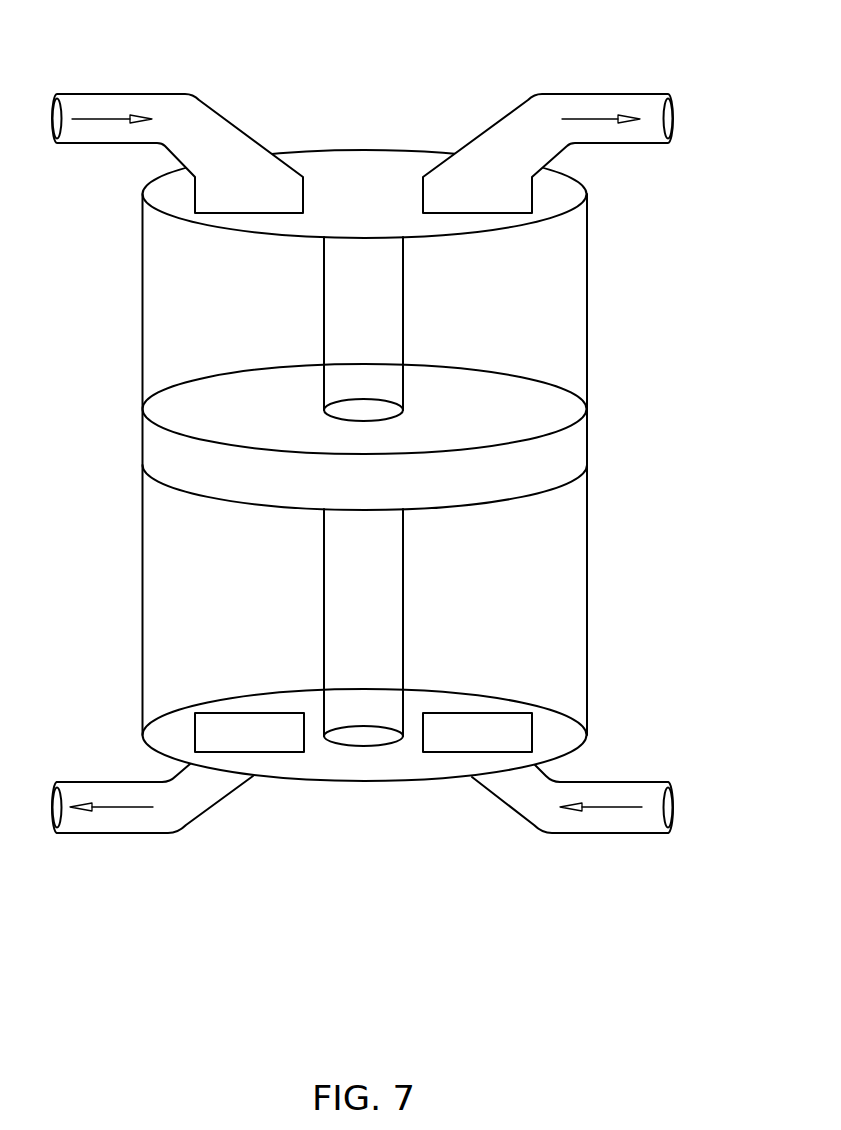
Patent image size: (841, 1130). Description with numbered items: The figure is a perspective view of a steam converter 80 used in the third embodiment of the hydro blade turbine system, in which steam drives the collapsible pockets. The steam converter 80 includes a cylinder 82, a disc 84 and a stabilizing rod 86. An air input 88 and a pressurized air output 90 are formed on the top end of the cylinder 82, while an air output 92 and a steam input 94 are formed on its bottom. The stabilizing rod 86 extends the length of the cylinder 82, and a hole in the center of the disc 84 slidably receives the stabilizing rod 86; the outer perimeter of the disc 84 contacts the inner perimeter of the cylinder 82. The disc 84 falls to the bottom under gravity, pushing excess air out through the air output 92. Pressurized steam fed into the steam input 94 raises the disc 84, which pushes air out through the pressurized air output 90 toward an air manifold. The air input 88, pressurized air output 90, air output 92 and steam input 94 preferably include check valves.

The steam converter 80 is at (416, 453).
The cylinder 82 is at (587, 293).
The disc 84 is at (528, 498).
The stabilizing rod 86 is at (403, 613).
The air input 88 is at (107, 83).
The pressurized air output 90 is at (619, 83).
The air output 92 is at (118, 833).
The steam input 94 is at (637, 768).